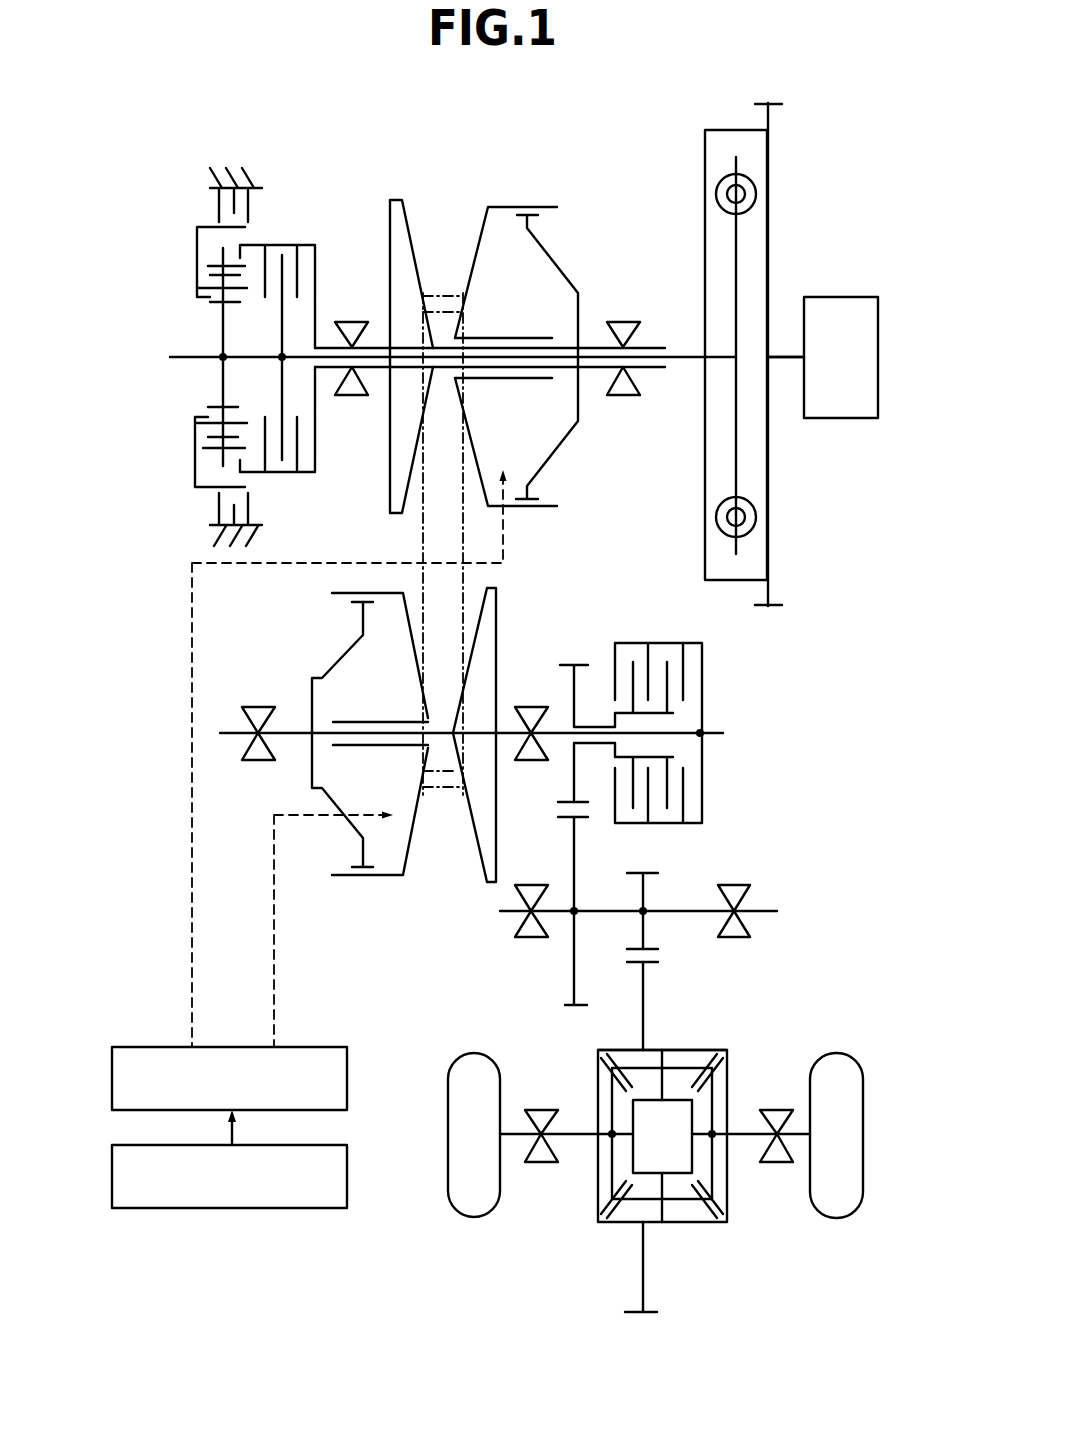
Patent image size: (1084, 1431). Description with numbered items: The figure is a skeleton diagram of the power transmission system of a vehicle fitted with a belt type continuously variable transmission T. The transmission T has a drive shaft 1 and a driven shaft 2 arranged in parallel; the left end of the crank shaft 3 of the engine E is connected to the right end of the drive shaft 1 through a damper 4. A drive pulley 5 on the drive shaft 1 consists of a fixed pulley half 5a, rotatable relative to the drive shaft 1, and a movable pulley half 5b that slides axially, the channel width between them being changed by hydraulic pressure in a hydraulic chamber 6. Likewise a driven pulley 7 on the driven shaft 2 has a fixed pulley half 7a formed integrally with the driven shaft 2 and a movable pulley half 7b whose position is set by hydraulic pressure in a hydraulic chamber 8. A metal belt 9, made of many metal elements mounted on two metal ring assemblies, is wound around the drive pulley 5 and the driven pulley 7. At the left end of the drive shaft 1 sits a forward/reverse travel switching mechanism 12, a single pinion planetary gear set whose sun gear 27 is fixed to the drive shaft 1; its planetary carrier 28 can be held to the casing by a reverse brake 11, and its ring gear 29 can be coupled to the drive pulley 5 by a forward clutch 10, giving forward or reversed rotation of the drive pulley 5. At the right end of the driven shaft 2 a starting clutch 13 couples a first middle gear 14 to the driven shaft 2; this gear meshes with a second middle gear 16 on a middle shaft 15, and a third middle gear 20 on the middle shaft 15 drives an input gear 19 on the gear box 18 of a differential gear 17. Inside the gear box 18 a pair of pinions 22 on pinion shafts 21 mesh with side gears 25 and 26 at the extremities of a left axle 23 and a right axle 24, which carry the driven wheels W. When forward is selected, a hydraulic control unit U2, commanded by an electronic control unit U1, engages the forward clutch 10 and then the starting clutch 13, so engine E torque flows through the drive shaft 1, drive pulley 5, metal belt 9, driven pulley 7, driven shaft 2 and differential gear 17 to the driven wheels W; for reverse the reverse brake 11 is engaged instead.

The drive shaft 1 is at (592, 327).
The driven shaft 2 is at (558, 730).
The crank shaft 3 is at (784, 363).
The damper 4 is at (781, 212).
The drive pulley 5 is at (473, 307).
The fixed pulley half 5a is at (408, 233).
The movable pulley half 5b is at (506, 324).
The hydraulic chamber 6 is at (538, 304).
The driven pulley 7 is at (414, 781).
The fixed pulley half 7a is at (477, 843).
The movable pulley half 7b is at (410, 853).
The hydraulic chamber 8 is at (392, 692).
The metal belt 9 is at (420, 540).
The forward clutch 10 is at (282, 490).
The reverse brake 11 is at (205, 508).
The forward/reverse travel switching mechanism 12 is at (194, 357).
The starting clutch 13 is at (644, 633).
The first middle gear 14 is at (580, 663).
The middle shaft 15 is at (603, 907).
The second middle gear 16 is at (568, 1008).
The differential gear 17 is at (662, 1144).
The gear box 18 is at (675, 1045).
The input gear 19 is at (650, 963).
The third middle gear 20 is at (653, 872).
The pinion shaft 21 is at (662, 1065).
The pinion 22 is at (618, 1053).
The left axle 23 is at (567, 1140).
The right axle 24 is at (748, 1140).
The side gear 25 is at (607, 1072).
The side gear 26 is at (718, 1070).
The sun gear 27 is at (210, 312).
The planetary carrier 28 is at (195, 457).
The ring gear 29 is at (213, 266).
The engine E is at (833, 369).
The belt type continuously variable transmission T is at (553, 561).
The driven wheel W is at (440, 1190).
The electronic control unit U1 is at (348, 1163).
The hydraulic control unit U2 is at (348, 1072).